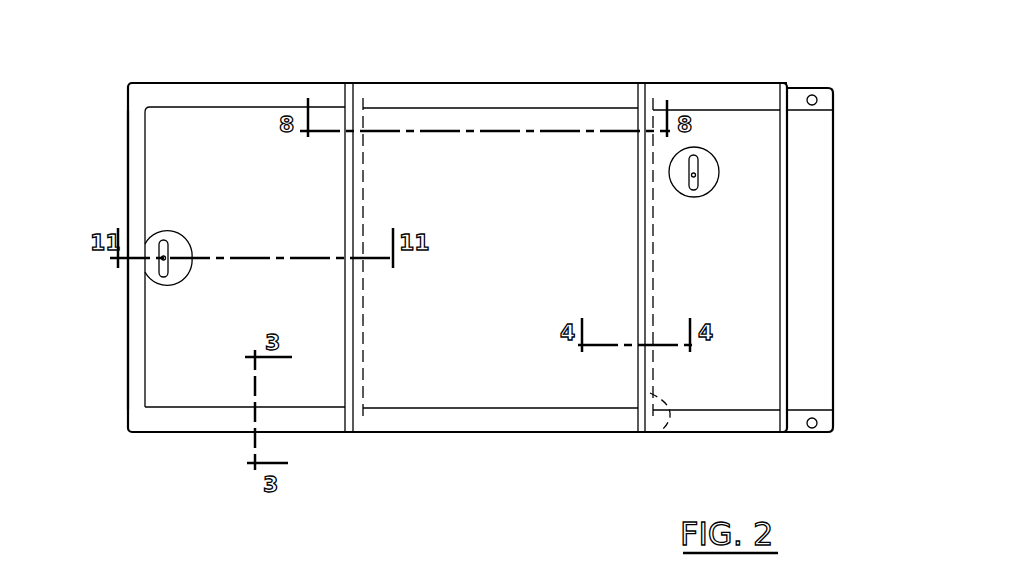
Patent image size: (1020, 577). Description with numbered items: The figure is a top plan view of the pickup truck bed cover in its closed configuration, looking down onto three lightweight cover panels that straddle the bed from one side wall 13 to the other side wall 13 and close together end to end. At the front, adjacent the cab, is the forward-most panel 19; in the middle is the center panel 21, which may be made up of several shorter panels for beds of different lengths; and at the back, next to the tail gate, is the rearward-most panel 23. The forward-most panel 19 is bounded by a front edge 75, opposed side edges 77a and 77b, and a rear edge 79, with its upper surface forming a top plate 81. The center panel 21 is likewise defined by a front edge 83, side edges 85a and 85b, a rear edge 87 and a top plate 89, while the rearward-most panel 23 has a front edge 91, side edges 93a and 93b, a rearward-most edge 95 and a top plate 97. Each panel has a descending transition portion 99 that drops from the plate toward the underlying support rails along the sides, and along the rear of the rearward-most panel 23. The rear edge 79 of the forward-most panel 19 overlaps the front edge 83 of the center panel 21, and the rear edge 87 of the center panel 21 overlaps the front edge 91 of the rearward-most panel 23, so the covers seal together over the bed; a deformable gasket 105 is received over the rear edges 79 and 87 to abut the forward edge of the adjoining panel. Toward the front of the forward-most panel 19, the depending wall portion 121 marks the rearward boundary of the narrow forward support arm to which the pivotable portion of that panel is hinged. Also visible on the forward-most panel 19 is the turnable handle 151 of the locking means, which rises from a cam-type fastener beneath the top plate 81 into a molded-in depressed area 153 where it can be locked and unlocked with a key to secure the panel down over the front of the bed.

The side wall 13 is at (540, 82).
The forward-most panel 19 is at (734, 295).
The center panel 21 is at (494, 295).
The rearward-most panel 23 is at (256, 301).
The front edge 75 is at (834, 196).
The side edge 77a is at (745, 83).
The side edge 77b is at (688, 433).
The rear edge 79 is at (655, 233).
The top plate 81 is at (758, 338).
The front edge 83 is at (660, 440).
The side edge 85a is at (435, 82).
The side edge 85b is at (417, 433).
The rear edge 87 is at (355, 162).
The top plate 89 is at (410, 382).
The front edge 91 is at (363, 340).
The side edge 93a is at (208, 82).
The side edge 93b is at (295, 433).
The rearward-most edge 95 is at (126, 377).
The top plate 97 is at (200, 383).
The descending transition portion 99 is at (343, 207).
The deformable gasket 105 is at (818, 250).
The depending wall portion 121 is at (708, 160).
The turnable handle 151 is at (698, 185).
The depressed area 153 is at (178, 242).